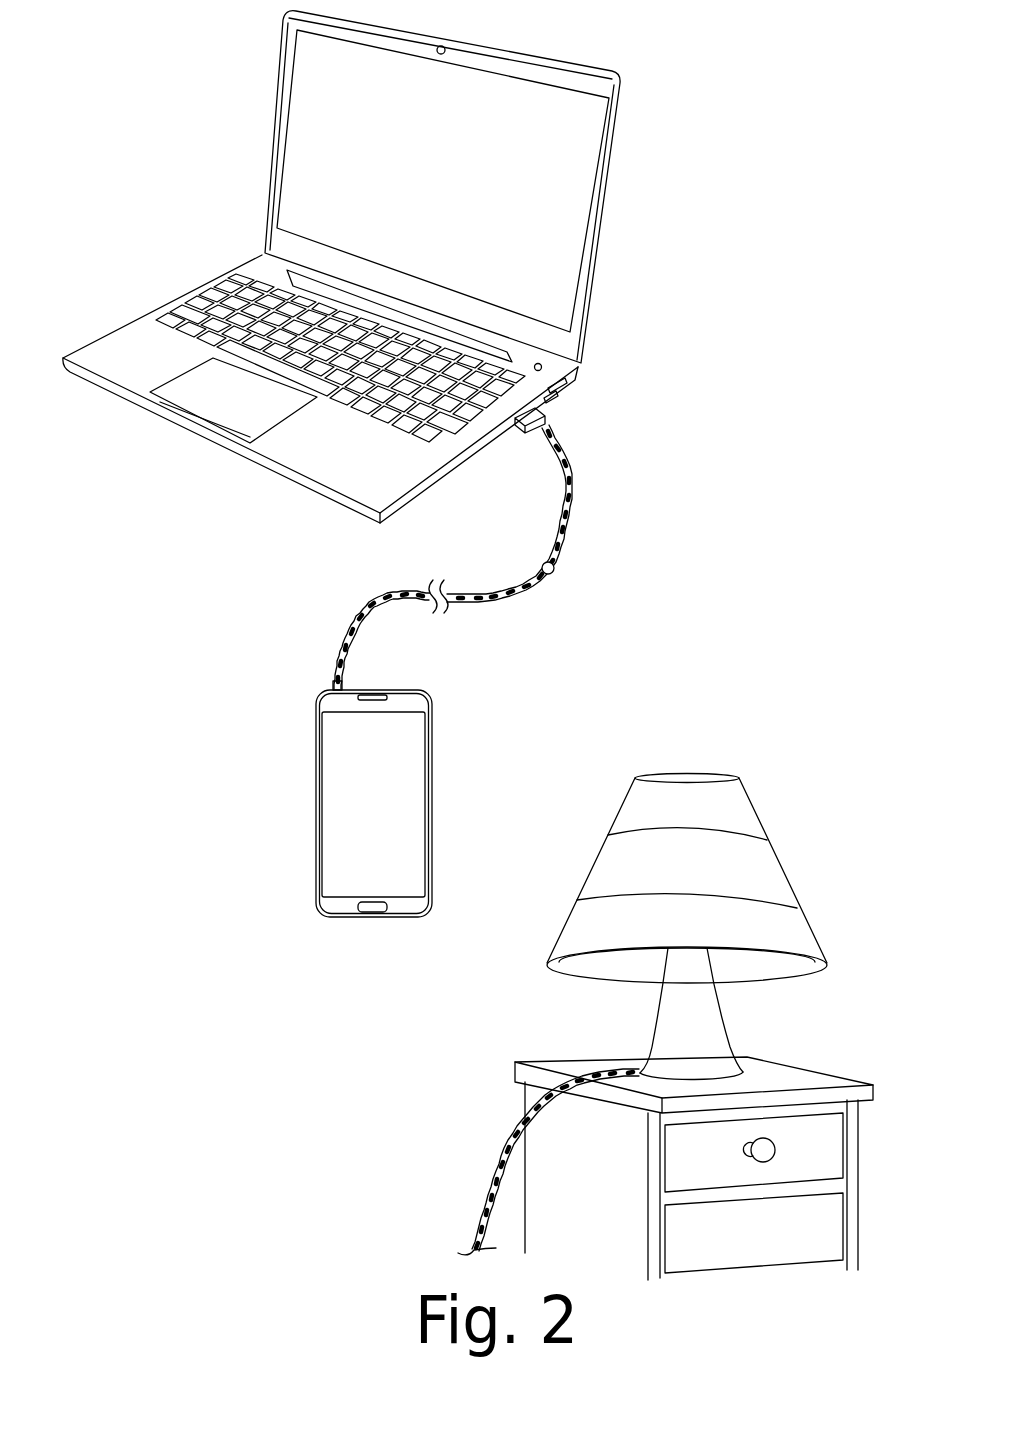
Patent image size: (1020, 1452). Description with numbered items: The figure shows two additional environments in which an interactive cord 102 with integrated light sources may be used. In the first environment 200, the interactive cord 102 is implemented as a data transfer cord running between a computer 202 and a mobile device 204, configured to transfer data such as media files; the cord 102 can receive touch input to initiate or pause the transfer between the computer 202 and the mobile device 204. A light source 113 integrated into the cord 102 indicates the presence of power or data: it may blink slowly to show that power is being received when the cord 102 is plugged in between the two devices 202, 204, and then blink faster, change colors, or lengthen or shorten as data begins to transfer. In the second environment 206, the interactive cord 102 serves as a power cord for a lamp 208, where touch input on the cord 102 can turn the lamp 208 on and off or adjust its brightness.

The environment 200 is at (255, 90).
The computer 202 is at (625, 90).
The interactive cord 102 is at (573, 510).
The light source 113 is at (554, 565).
The mobile device 204 is at (428, 795).
The environment 206 is at (810, 828).
The lamp 208 is at (667, 775).